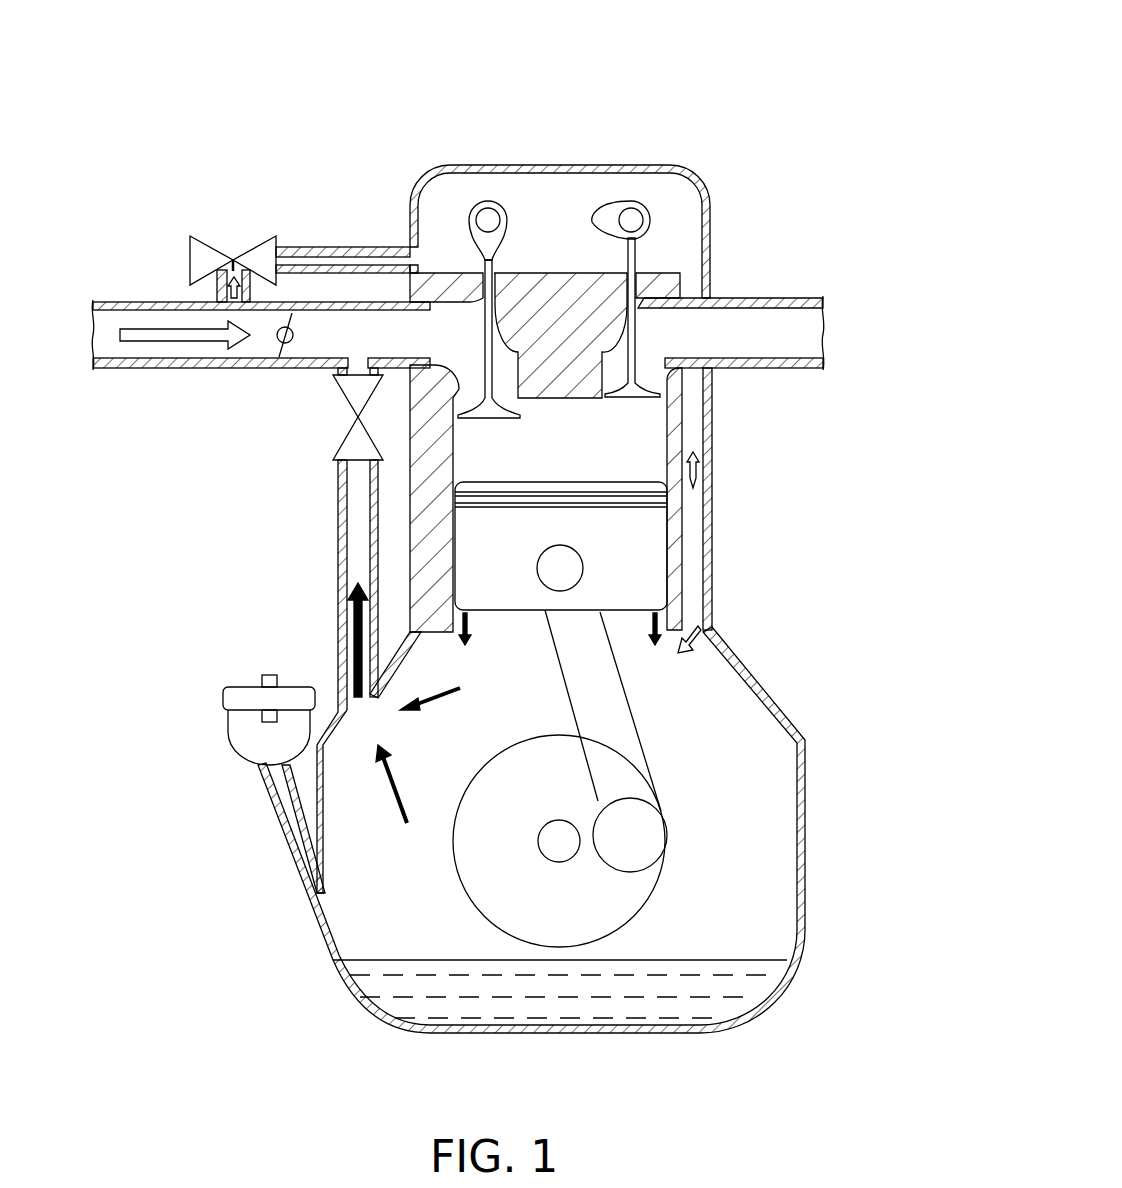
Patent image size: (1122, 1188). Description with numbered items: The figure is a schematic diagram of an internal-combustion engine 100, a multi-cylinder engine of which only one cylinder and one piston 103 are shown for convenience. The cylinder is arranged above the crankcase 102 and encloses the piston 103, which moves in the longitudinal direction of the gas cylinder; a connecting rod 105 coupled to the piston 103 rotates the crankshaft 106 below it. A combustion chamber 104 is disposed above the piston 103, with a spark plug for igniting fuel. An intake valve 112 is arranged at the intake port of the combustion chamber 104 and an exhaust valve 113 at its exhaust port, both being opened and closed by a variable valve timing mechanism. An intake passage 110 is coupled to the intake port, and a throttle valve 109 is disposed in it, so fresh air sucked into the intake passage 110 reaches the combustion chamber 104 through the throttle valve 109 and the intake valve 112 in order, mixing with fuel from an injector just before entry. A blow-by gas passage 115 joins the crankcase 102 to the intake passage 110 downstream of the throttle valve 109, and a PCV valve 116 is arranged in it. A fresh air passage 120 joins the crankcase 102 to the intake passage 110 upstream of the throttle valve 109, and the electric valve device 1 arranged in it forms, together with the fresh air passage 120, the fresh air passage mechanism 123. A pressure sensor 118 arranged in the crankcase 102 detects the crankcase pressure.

The internal-combustion engine 100 is at (730, 90).
The electric valve device 1 is at (199, 233).
The crankcase 102 is at (770, 697).
The piston 103 is at (623, 613).
The combustion chamber 104 is at (657, 452).
The connecting rod 105 is at (638, 735).
The crankshaft 106 is at (660, 872).
The throttle valve 109 is at (284, 344).
The intake passage 110 is at (173, 369).
The intake valve 112 is at (493, 420).
The exhaust valve 113 is at (620, 400).
The blow-by gas passage 115 is at (338, 560).
The PCV valve 116 is at (333, 447).
The pressure sensor 118 is at (240, 757).
The fresh air passage 120 is at (366, 246).
The fresh air passage mechanism 123 is at (294, 225).